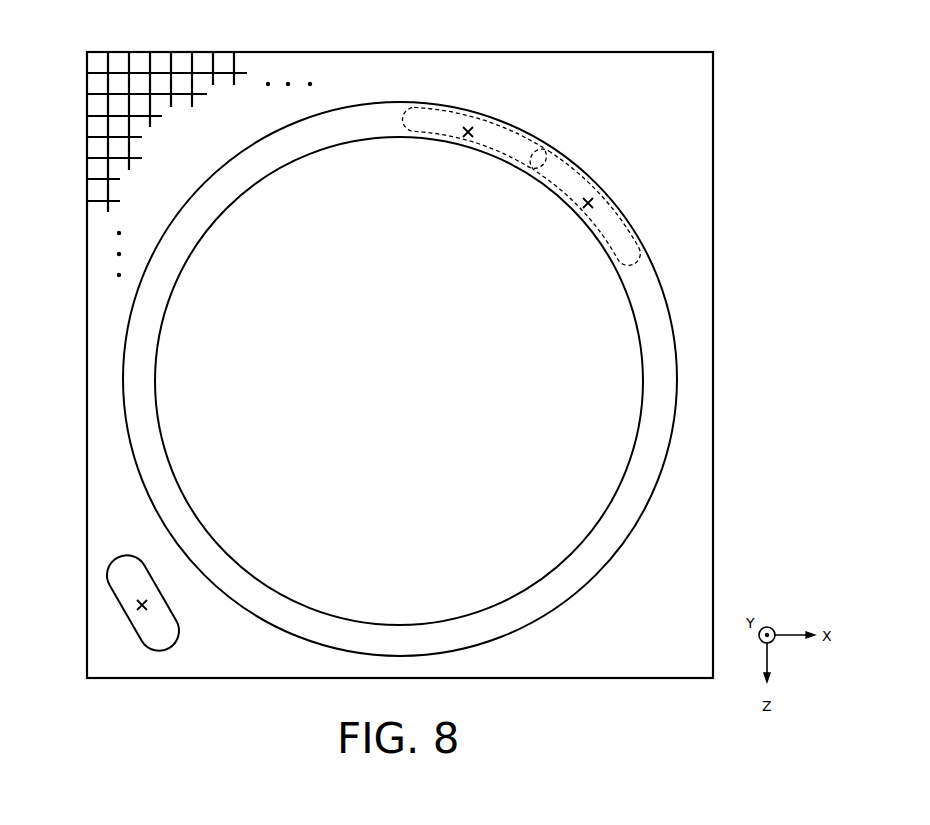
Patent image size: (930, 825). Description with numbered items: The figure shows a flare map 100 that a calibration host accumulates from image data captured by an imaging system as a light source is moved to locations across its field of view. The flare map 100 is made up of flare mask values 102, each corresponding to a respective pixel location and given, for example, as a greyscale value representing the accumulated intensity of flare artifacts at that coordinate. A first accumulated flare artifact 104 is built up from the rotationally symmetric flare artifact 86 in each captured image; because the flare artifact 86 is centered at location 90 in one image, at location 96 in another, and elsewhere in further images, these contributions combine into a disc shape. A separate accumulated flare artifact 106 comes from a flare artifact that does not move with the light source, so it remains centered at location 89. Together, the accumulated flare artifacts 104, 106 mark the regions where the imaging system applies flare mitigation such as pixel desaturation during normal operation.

The flare map 100 is at (738, 66).
The flare mask values 102 is at (140, 62).
The first accumulated flare artifact 104 is at (597, 563).
The accumulated flare artifact 106 is at (126, 622).
The rotationally symmetric flare artifact 86 is at (505, 124).
The location 89 is at (148, 606).
The location 90 is at (466, 139).
The location 96 is at (586, 210).